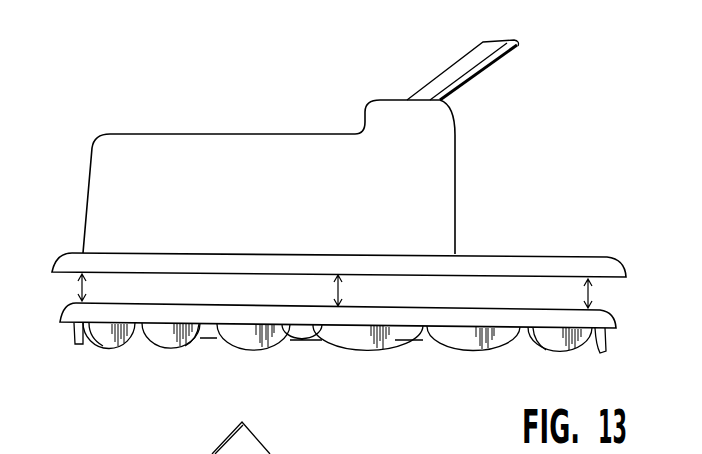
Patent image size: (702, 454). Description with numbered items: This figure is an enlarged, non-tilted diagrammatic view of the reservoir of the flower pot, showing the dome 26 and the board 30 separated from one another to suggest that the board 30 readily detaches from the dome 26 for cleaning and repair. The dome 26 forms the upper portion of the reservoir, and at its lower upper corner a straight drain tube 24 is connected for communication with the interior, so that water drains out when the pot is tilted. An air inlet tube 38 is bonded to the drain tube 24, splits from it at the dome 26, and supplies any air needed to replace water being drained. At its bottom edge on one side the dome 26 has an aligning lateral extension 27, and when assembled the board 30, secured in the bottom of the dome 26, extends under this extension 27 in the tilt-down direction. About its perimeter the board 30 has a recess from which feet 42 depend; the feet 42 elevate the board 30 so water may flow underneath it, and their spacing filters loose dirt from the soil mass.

The drain tube 24 is at (448, 66).
The dome 26 is at (222, 182).
The aligning lateral extension 27 is at (550, 268).
The board 30 is at (142, 314).
The air inlet tube 38 is at (476, 77).
The feet 42 is at (337, 332).